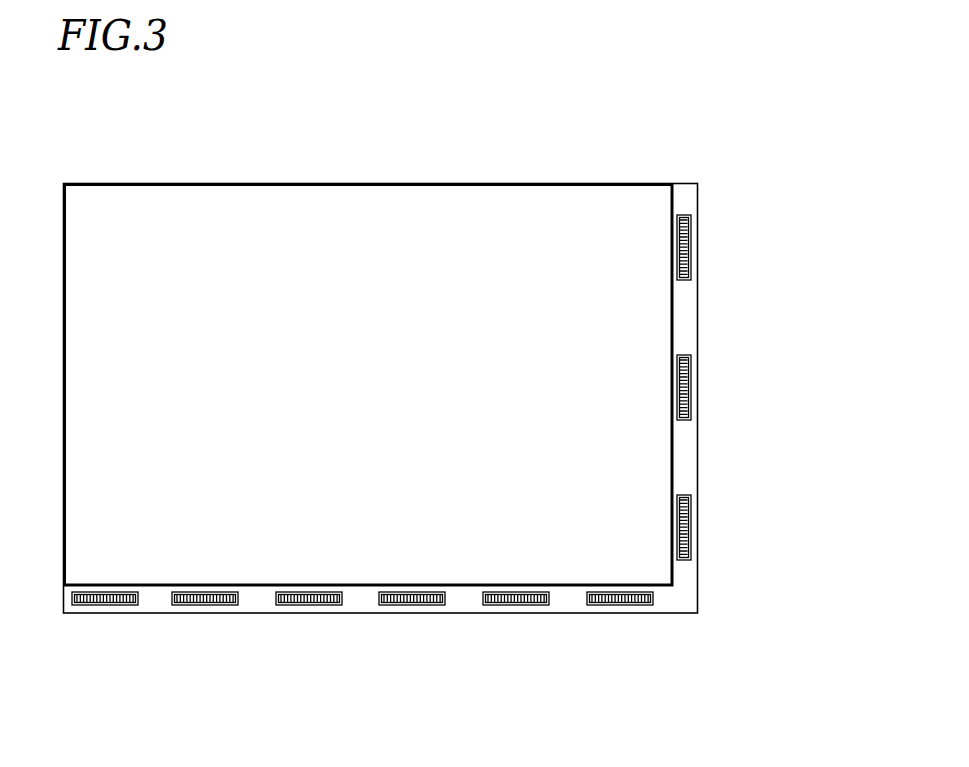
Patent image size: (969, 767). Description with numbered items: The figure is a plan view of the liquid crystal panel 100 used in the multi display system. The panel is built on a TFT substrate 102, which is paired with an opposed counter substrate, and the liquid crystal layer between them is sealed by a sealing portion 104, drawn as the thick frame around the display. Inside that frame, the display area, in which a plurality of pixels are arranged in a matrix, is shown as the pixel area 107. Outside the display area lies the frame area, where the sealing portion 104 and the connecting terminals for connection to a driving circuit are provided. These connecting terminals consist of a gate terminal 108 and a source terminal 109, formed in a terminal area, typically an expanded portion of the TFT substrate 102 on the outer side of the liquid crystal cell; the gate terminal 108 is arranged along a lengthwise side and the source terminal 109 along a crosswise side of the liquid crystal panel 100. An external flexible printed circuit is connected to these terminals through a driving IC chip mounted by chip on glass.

The liquid crystal panel 100 is at (115, 151).
The TFT substrate 102 is at (692, 182).
The sealing portion 104 is at (601, 183).
The pixel area 107 is at (368, 385).
The gate terminal 108 is at (690, 243).
The source terminal 109 is at (623, 603).